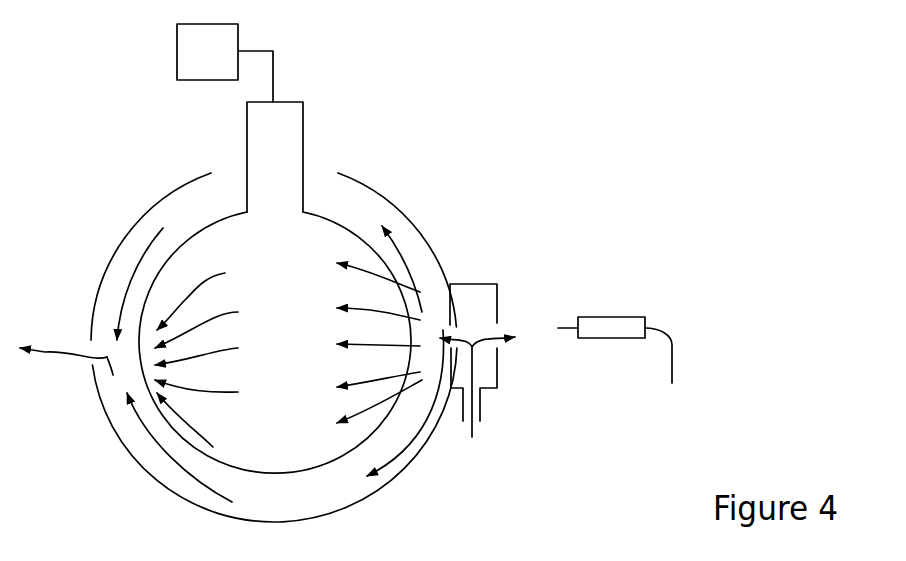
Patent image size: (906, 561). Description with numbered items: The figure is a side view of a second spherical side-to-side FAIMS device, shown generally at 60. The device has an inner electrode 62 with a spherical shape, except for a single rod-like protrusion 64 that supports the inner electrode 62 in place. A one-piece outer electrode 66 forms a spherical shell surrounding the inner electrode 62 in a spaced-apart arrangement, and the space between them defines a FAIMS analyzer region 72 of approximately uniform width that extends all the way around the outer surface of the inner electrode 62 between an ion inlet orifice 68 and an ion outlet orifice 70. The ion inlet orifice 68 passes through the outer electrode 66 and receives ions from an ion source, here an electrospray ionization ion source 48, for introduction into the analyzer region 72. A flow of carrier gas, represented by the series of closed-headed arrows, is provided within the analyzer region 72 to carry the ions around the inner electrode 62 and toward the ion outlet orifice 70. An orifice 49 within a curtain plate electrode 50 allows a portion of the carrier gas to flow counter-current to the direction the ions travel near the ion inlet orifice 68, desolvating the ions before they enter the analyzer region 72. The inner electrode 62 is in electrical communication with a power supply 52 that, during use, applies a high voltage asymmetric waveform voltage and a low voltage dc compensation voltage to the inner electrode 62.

The spherical side-to-side FAIMS device 60 is at (782, 148).
The power supply 52 is at (177, 42).
The rod-like protrusion 64 is at (303, 117).
The inner electrode 62 is at (318, 217).
The one-piece outer electrode 66 is at (437, 255).
The ion inlet orifice 68 is at (457, 327).
The curtain plate electrode 50 is at (498, 375).
The orifice 49 is at (495, 325).
The electrospray ionization ion source 48 is at (610, 317).
The ion outlet orifice 70 is at (90, 340).
The FAIMS analyzer region 72 is at (360, 482).